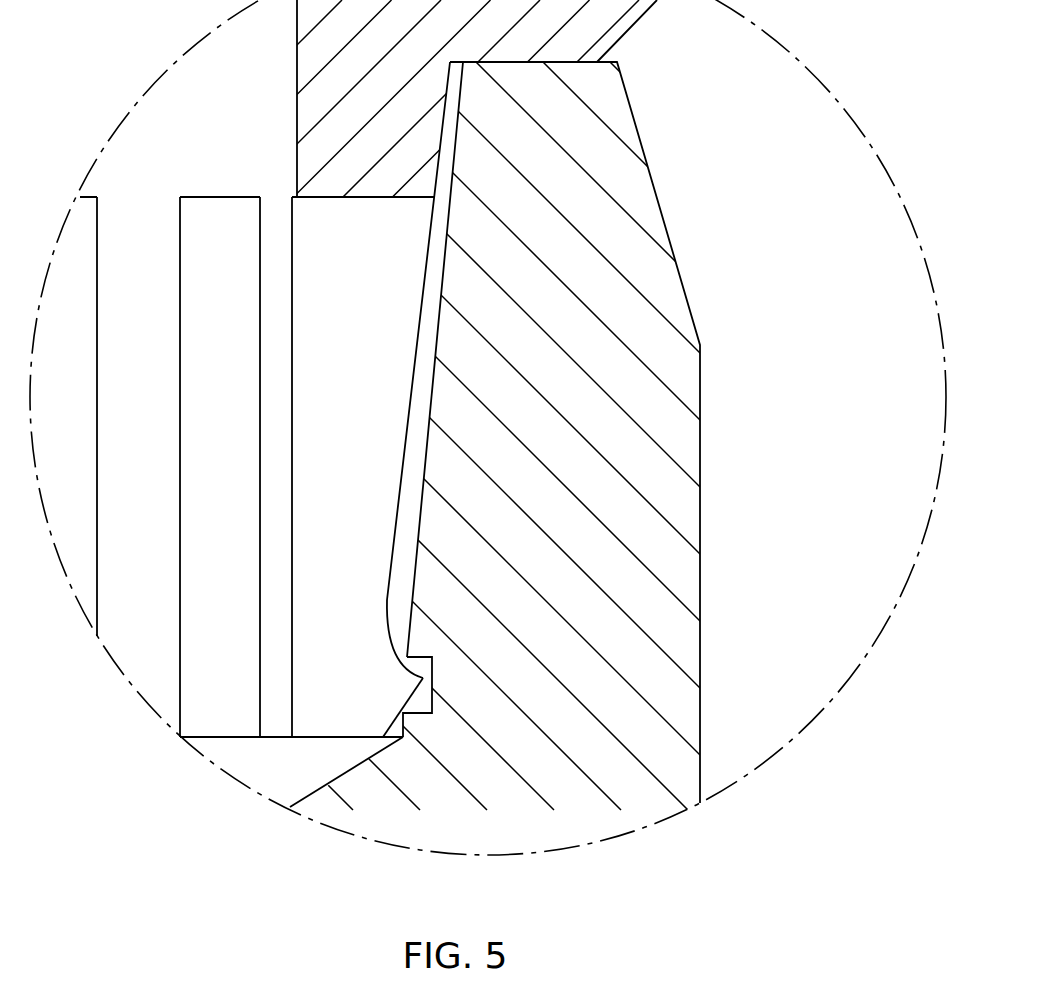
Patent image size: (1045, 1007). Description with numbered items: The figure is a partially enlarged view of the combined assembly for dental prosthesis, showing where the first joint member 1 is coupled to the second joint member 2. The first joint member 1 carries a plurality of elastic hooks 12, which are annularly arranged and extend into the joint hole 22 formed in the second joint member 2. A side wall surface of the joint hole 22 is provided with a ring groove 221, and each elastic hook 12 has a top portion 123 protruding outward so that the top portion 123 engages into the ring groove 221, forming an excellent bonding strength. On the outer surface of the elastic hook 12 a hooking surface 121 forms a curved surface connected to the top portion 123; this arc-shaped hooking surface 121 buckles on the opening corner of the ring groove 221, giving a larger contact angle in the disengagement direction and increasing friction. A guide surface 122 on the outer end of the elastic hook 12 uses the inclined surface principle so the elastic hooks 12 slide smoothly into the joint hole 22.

The first joint member 1 is at (672, 33).
The second joint member 2 is at (675, 145).
The elastic hook 12 is at (373, 448).
The joint hole 22 is at (437, 330).
The hooking surface 121 is at (383, 630).
The guide surface 122 is at (557, 847).
The top portion 123 is at (424, 677).
The ring groove 221 is at (432, 682).